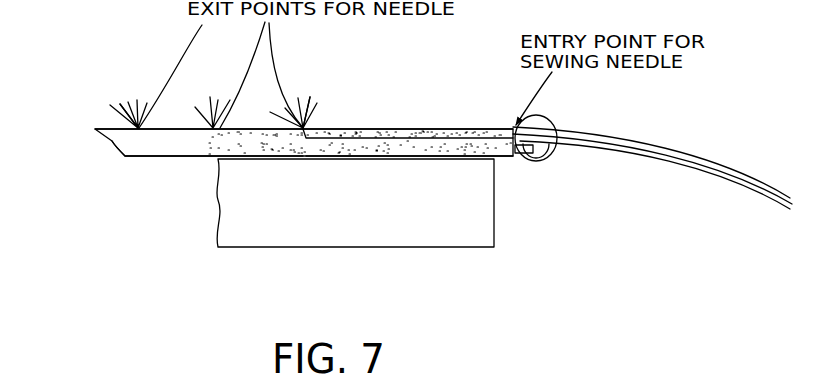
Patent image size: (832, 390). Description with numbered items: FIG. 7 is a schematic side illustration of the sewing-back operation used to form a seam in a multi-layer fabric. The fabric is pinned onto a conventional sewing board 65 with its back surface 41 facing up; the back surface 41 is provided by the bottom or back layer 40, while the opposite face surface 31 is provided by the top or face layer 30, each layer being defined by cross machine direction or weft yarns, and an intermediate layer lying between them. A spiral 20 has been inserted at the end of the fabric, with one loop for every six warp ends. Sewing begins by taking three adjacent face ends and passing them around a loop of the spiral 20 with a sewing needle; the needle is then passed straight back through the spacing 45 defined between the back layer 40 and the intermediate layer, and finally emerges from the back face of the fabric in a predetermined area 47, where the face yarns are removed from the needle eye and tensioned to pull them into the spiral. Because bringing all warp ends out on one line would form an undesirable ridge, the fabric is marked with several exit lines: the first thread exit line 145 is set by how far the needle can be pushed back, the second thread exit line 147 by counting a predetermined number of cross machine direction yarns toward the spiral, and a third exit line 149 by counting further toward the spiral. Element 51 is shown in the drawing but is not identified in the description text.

The spiral 20 is at (536, 156).
The face layer 30 is at (121, 155).
The face surface 31 is at (355, 153).
The back layer 40 is at (95, 133).
The back surface 41 is at (412, 127).
The spacing 45 is at (451, 140).
The predetermined area 47 is at (107, 122).
The fabric backing layer 51 is at (106, 144).
The sewing board 65 is at (485, 200).
The first thread exit line 145 is at (134, 101).
The second thread exit line 147 is at (212, 97).
The third exit line 149 is at (302, 99).